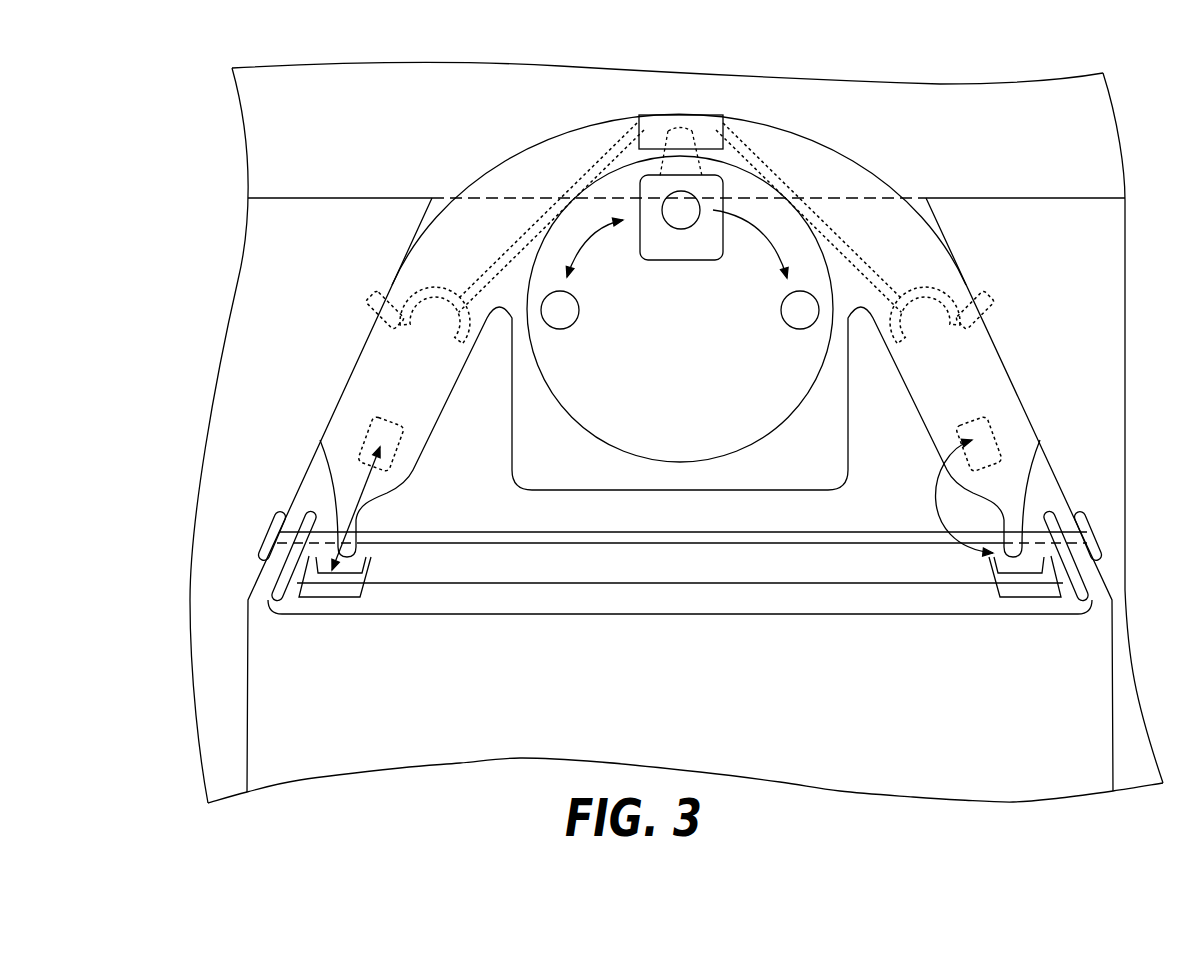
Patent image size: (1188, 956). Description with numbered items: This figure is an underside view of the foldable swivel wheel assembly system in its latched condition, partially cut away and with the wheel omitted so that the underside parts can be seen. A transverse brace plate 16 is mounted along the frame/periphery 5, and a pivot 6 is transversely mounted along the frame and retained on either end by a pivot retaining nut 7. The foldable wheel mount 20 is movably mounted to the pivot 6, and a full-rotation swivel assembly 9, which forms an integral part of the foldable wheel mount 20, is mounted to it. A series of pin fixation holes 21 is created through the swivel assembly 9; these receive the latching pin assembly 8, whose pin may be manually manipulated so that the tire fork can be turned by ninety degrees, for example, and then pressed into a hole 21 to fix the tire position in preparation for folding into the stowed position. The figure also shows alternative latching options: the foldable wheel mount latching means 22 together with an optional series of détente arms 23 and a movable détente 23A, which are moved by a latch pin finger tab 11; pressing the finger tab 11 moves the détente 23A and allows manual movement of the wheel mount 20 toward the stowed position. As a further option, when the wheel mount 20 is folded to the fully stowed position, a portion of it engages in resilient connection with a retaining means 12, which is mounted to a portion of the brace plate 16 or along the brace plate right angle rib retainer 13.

The frame/periphery 5 is at (1087, 390).
The pivot 6 is at (543, 543).
The pivot retaining nut 7 is at (263, 527).
The latching pin assembly 8 is at (707, 250).
The 360° swivel assembly 9 is at (730, 432).
The latch pin finger tab 11 is at (687, 137).
The retaining means in stowed position 12 is at (333, 597).
The brace plate right angle rib retainer 13 is at (880, 598).
The brace plate 16 is at (687, 518).
The foldable wheel mount 20 is at (528, 167).
The foldable wheel mount pin fixation hole 21 is at (682, 210).
The foldable wheel mount latching means 22 is at (652, 133).
The détente arms 23 is at (508, 238).
The movable détente 23A is at (383, 290).